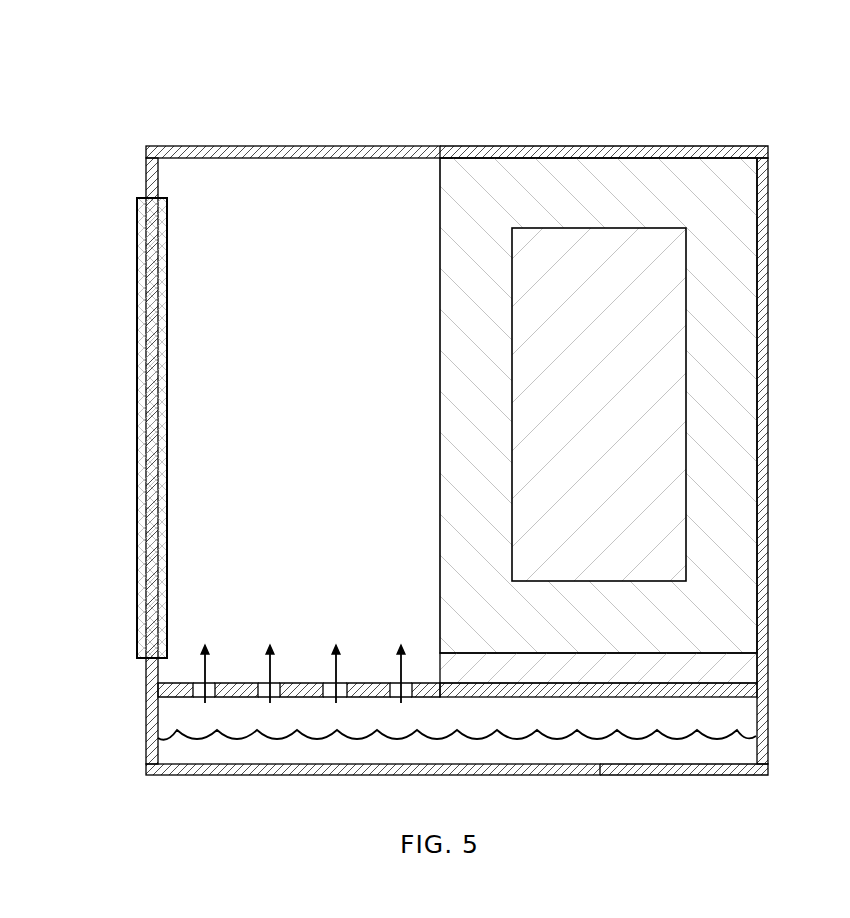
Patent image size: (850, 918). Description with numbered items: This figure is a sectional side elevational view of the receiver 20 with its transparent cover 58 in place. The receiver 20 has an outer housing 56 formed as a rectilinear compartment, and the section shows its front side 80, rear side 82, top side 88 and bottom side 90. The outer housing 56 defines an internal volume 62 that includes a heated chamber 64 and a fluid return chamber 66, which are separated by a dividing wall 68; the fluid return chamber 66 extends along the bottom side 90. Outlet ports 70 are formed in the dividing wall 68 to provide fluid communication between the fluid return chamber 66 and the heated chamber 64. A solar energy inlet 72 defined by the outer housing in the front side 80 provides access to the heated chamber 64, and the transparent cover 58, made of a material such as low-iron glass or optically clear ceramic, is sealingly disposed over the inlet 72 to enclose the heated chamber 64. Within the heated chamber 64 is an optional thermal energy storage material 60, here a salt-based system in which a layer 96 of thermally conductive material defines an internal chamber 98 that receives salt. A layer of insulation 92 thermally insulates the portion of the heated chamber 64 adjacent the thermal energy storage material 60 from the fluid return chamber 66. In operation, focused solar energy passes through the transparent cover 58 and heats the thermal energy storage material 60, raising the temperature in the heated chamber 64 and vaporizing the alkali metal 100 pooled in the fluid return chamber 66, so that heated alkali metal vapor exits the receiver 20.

The receiver 20 is at (449, 432).
The outer housing 56 is at (205, 146).
The transparent cover 58 is at (137, 400).
The thermal energy storage material 60 is at (440, 522).
The internal volume 62 is at (283, 176).
The heated chamber 64 is at (300, 454).
The fluid return chamber 66 is at (576, 725).
The dividing wall 68 is at (740, 700).
The outlet ports 70 is at (213, 683).
The solar energy inlet 72 is at (152, 203).
The front side 80 is at (146, 722).
The rear side 82 is at (768, 440).
The top side 88 is at (586, 146).
The bottom side 90 is at (572, 768).
The layer of insulation 92 is at (757, 666).
The layer of thermally conductive material 96 is at (452, 290).
The internal chamber 98 is at (518, 372).
The alkali metal 100 is at (648, 758).